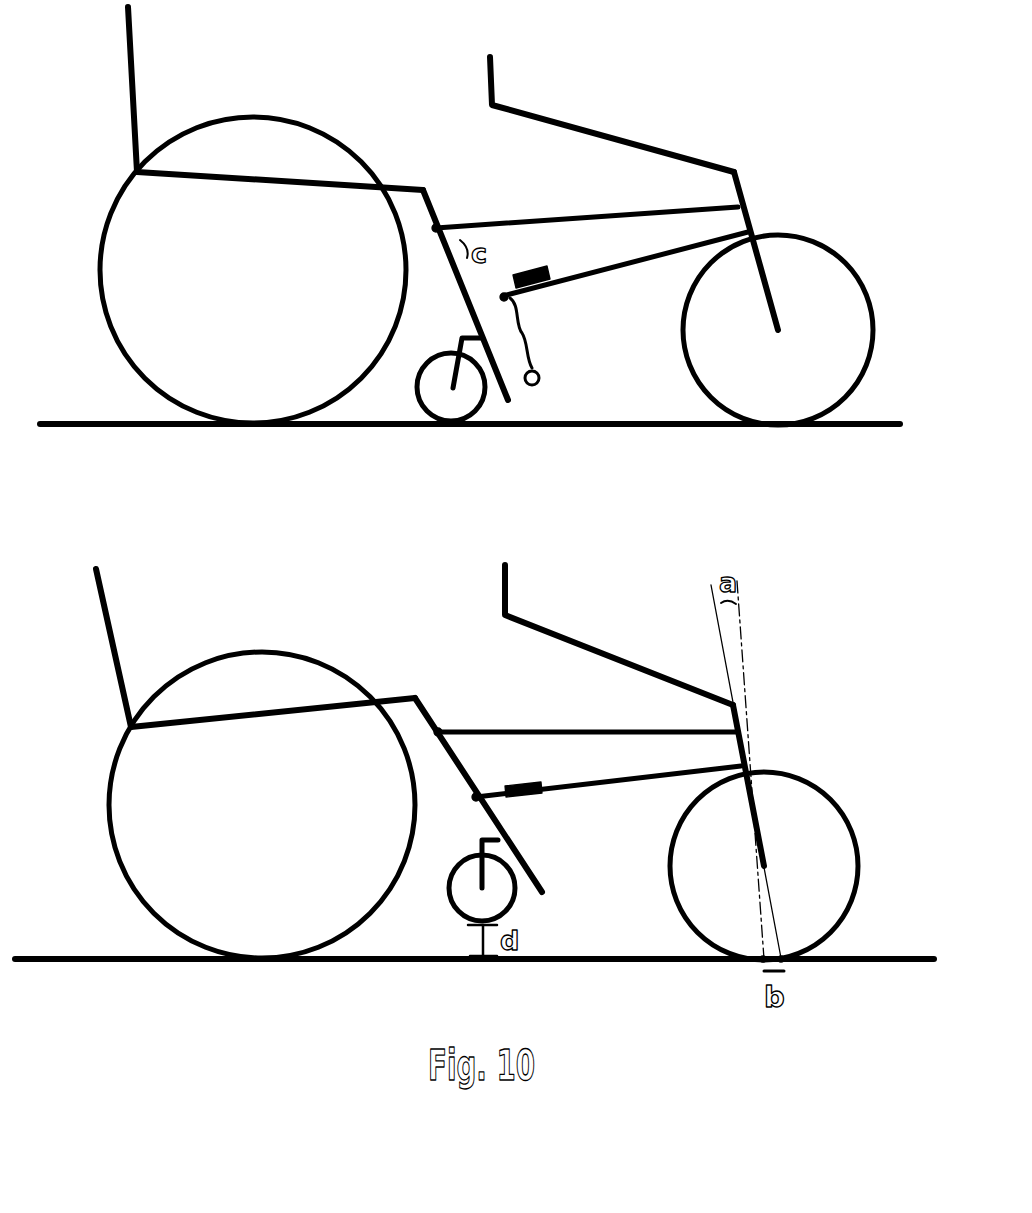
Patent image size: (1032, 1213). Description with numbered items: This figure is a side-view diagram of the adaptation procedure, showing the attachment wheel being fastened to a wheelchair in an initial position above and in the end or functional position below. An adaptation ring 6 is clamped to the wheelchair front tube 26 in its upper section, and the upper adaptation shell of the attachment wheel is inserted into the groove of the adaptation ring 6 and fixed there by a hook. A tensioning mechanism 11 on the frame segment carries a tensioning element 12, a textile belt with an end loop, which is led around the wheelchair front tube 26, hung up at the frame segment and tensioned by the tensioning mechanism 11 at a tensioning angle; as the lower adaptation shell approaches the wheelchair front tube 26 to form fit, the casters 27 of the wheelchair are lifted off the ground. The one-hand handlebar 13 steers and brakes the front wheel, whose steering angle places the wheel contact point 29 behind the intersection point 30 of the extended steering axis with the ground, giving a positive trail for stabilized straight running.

The adaptation ring 6 is at (442, 226).
The tensioning mechanism 11 is at (560, 284).
The tensioning element 12 is at (533, 338).
The one-hand handlebar 13 is at (497, 63).
The wheelchair front tube 26 is at (436, 226).
The casters 27 is at (437, 392).
The wheel contact point 29 is at (762, 963).
The intersection point of extended steering axis with ground 30 is at (790, 963).